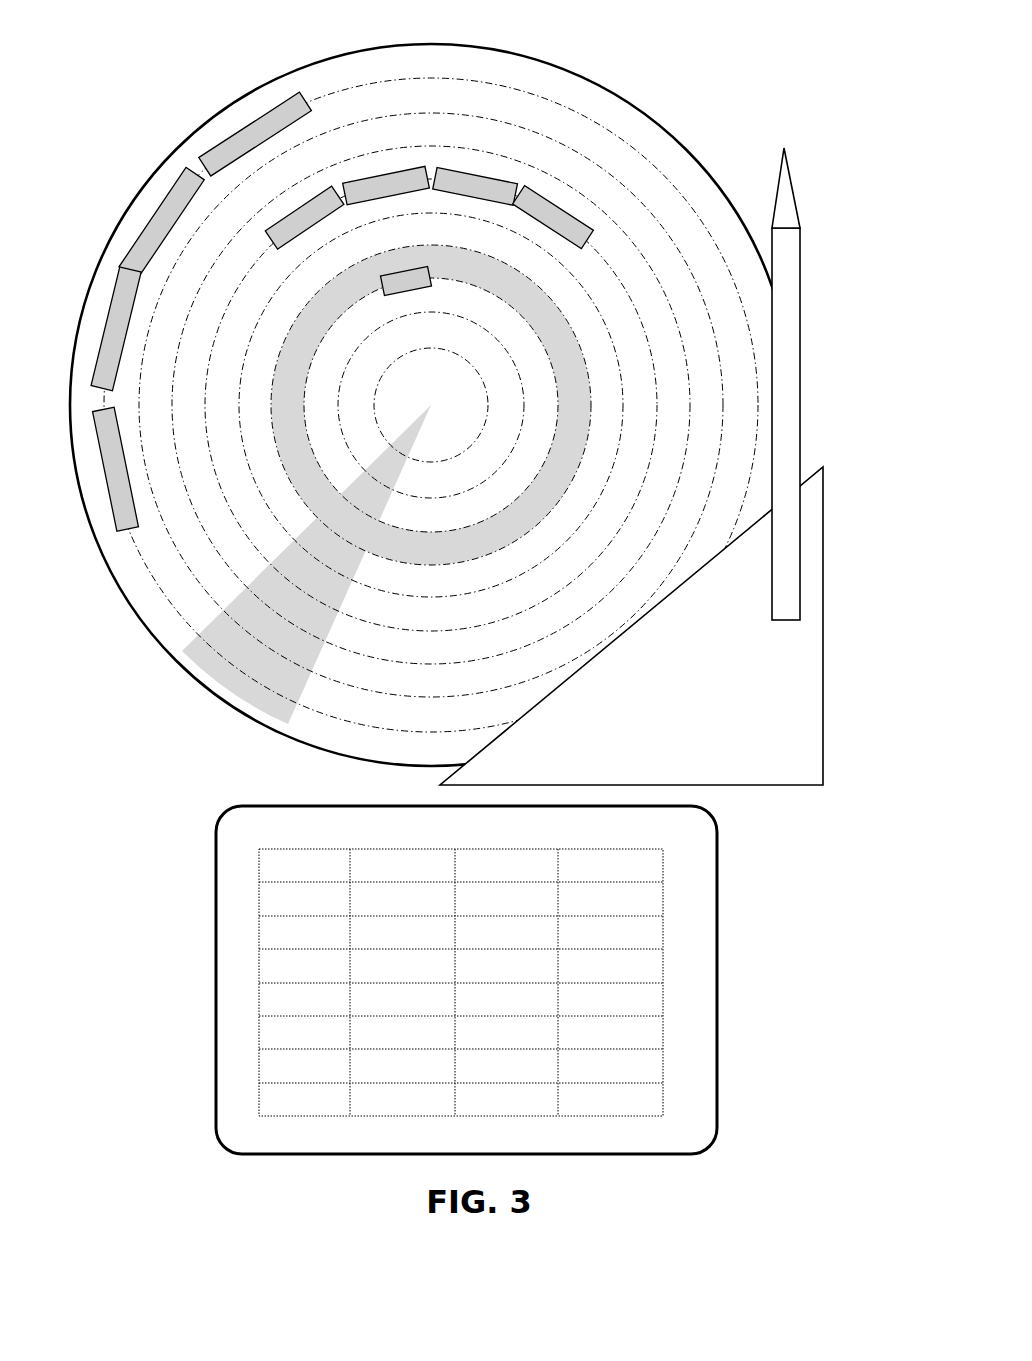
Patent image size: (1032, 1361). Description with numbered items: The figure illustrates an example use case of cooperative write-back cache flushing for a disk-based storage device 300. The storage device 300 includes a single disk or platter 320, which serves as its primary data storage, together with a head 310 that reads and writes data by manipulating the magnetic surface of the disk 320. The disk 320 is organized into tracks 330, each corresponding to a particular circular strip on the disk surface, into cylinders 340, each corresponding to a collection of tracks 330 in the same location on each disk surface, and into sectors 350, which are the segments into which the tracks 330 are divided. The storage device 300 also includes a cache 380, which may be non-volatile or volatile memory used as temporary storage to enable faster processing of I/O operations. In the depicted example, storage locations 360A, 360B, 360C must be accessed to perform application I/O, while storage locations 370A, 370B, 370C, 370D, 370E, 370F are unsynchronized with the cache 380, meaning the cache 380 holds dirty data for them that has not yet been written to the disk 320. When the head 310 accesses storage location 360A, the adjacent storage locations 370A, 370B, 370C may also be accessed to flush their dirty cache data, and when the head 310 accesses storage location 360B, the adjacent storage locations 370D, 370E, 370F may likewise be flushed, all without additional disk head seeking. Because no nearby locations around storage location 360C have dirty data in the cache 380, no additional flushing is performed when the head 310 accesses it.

The disk-based storage device 300 is at (911, 37).
The head 310 is at (800, 229).
The disk 320 is at (416, 405).
The track 330 is at (582, 338).
The cylinder 340 is at (500, 405).
The sector 350 is at (306, 564).
The storage location 360A is at (279, 139).
The storage location 360B is at (471, 205).
The storage location 360C is at (411, 296).
The storage location 370A is at (178, 238).
The storage location 370B is at (131, 340).
The storage location 370C is at (134, 468).
The storage location 370D is at (385, 205).
The storage location 370E is at (320, 233).
The storage location 370F is at (541, 234).
The cache 380 is at (466, 980).